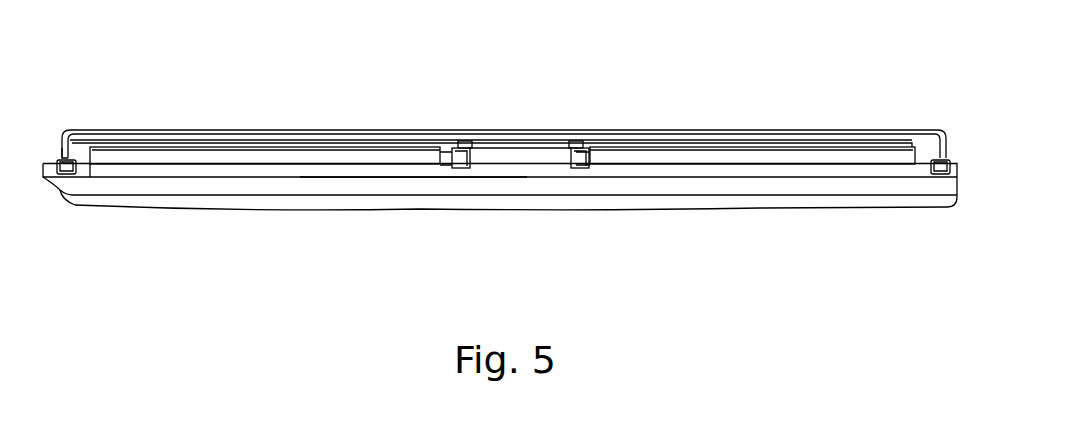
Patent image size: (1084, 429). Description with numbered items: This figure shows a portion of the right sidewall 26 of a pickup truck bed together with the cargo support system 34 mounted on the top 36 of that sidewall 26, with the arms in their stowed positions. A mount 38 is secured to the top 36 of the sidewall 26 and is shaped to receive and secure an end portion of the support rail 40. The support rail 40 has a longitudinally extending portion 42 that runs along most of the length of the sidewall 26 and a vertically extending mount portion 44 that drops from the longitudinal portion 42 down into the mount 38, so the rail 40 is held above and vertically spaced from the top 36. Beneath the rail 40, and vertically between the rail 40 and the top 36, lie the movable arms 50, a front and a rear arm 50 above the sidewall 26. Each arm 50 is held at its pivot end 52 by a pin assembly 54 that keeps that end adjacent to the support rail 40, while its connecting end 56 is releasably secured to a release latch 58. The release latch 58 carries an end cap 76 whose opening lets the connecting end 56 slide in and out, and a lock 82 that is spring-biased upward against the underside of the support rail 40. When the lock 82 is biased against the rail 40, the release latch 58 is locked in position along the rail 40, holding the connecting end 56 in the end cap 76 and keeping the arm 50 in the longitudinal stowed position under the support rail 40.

The sidewall 26 is at (775, 203).
The cargo support system 34 is at (553, 56).
The top 36 is at (300, 177).
The mount 38 is at (45, 177).
The support rail 40 is at (702, 130).
The longitudinally extending portion 42 is at (295, 127).
The vertically extending mount portion 44 is at (55, 140).
The arm 50 is at (337, 165).
The pivot end 52 is at (93, 176).
The pin assembly 54 is at (893, 143).
The connecting end 56 is at (590, 170).
The release latch 58 is at (472, 170).
The end cap 76 is at (573, 170).
The lock 82 is at (485, 138).